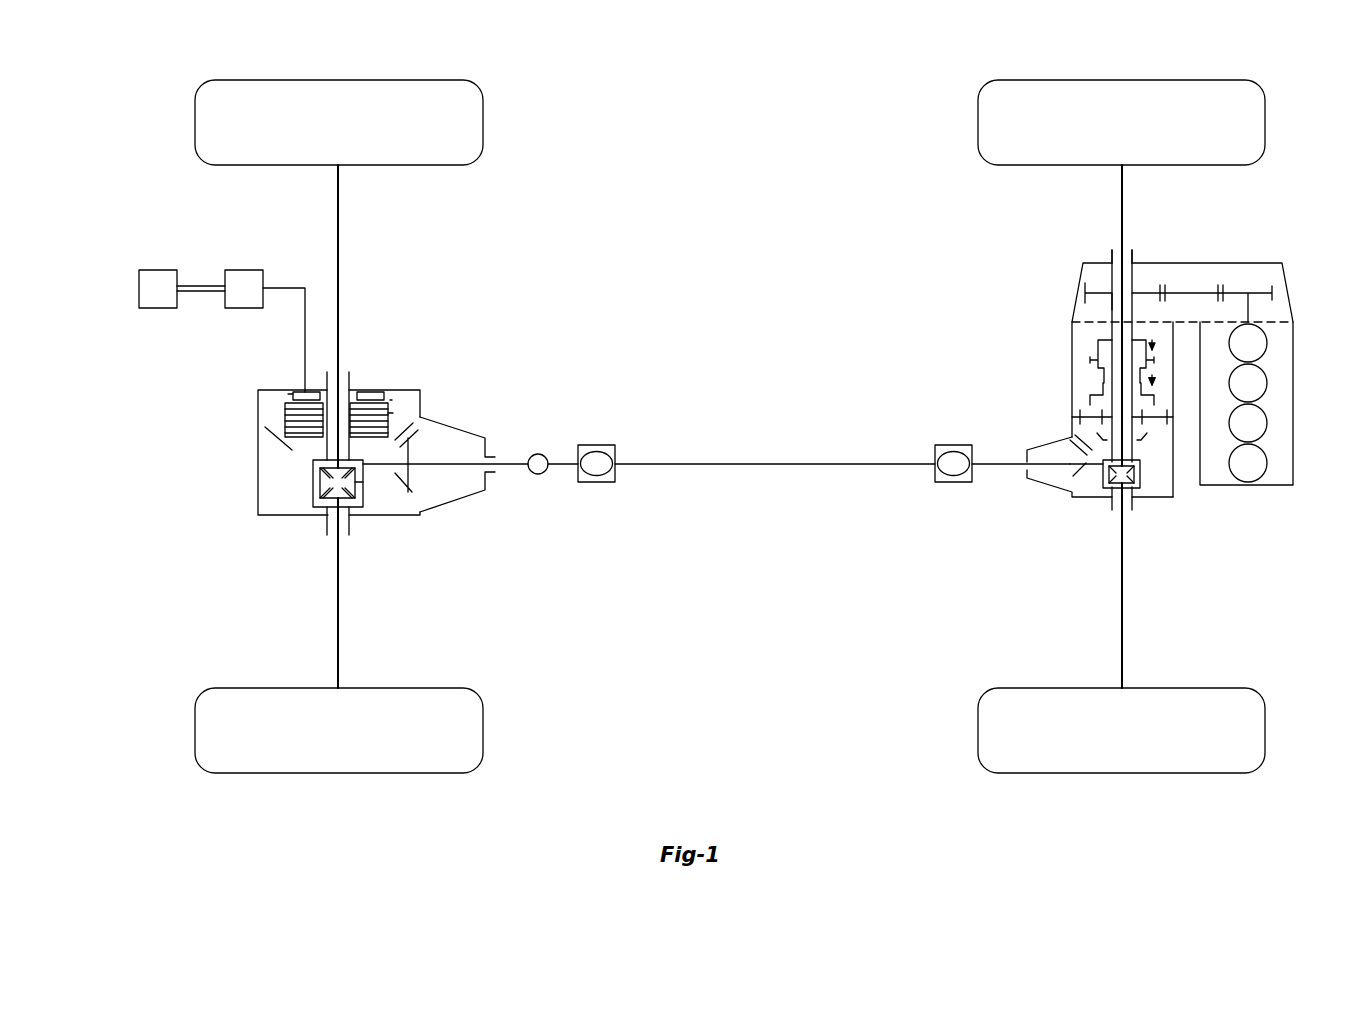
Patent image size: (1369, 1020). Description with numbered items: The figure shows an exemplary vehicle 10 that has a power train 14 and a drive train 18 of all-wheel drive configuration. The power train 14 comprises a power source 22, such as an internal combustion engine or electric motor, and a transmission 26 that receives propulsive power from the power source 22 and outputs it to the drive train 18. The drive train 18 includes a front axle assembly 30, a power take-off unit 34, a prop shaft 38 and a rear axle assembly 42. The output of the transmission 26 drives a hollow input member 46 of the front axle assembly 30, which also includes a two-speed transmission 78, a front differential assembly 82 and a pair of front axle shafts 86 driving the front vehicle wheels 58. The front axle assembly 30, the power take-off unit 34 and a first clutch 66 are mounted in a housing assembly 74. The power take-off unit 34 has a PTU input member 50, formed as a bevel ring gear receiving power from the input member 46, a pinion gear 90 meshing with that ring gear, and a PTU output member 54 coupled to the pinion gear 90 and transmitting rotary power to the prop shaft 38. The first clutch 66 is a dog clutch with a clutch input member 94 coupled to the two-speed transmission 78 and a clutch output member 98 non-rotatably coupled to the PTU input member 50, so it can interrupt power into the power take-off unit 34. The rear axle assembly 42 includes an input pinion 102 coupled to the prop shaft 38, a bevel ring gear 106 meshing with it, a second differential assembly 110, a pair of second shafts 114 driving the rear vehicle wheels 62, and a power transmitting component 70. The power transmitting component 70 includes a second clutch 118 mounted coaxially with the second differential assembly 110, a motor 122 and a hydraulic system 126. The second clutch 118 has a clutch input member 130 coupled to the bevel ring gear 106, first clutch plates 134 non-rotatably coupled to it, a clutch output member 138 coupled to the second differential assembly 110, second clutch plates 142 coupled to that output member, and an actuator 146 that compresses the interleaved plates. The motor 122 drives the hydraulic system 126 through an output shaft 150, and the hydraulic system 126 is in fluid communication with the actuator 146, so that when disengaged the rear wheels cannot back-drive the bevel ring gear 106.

The vehicle 10 is at (172, 776).
The power train 14 is at (1310, 370).
The drive train 18 is at (757, 395).
The power source 22 is at (1278, 475).
The transmission 26 is at (1280, 270).
The front axle assembly 30 is at (1093, 525).
The power take-off unit 34 is at (1052, 505).
The prop shaft 38 is at (652, 463).
The rear axle assembly 42 is at (230, 372).
The input member 46 is at (1112, 305).
The PTU input member 50 is at (1092, 436).
The PTU output member 54 is at (985, 460).
The front vehicle wheels 58 is at (978, 118).
The rear vehicle wheels 62 is at (195, 118).
The first clutch 66 is at (1158, 437).
The power transmitting component 70 is at (400, 400).
The housing assembly 74 is at (1150, 455).
The two-speed transmission 78 is at (1082, 395).
The front differential assembly 82 is at (1150, 482).
The front axle shafts 86 is at (1122, 203).
The pinion gear 90 is at (1066, 488).
The clutch input member 94 is at (1092, 440).
The clutch output member 98 is at (1148, 458).
The input pinion 102 is at (418, 493).
The bevel ring gear 106 is at (281, 440).
The second differential assembly 110 is at (312, 522).
The second shafts 114 is at (338, 203).
The second clutch 118 is at (393, 413).
The motor 122 is at (158, 270).
The hydraulic system 126 is at (245, 270).
The clutch input member 130 is at (285, 420).
The first clutch plates 134 is at (296, 392).
The clutch output member 138 is at (349, 412).
The second clutch plates 142 is at (378, 400).
The actuator 146 is at (290, 397).
The output shaft 150 is at (205, 285).